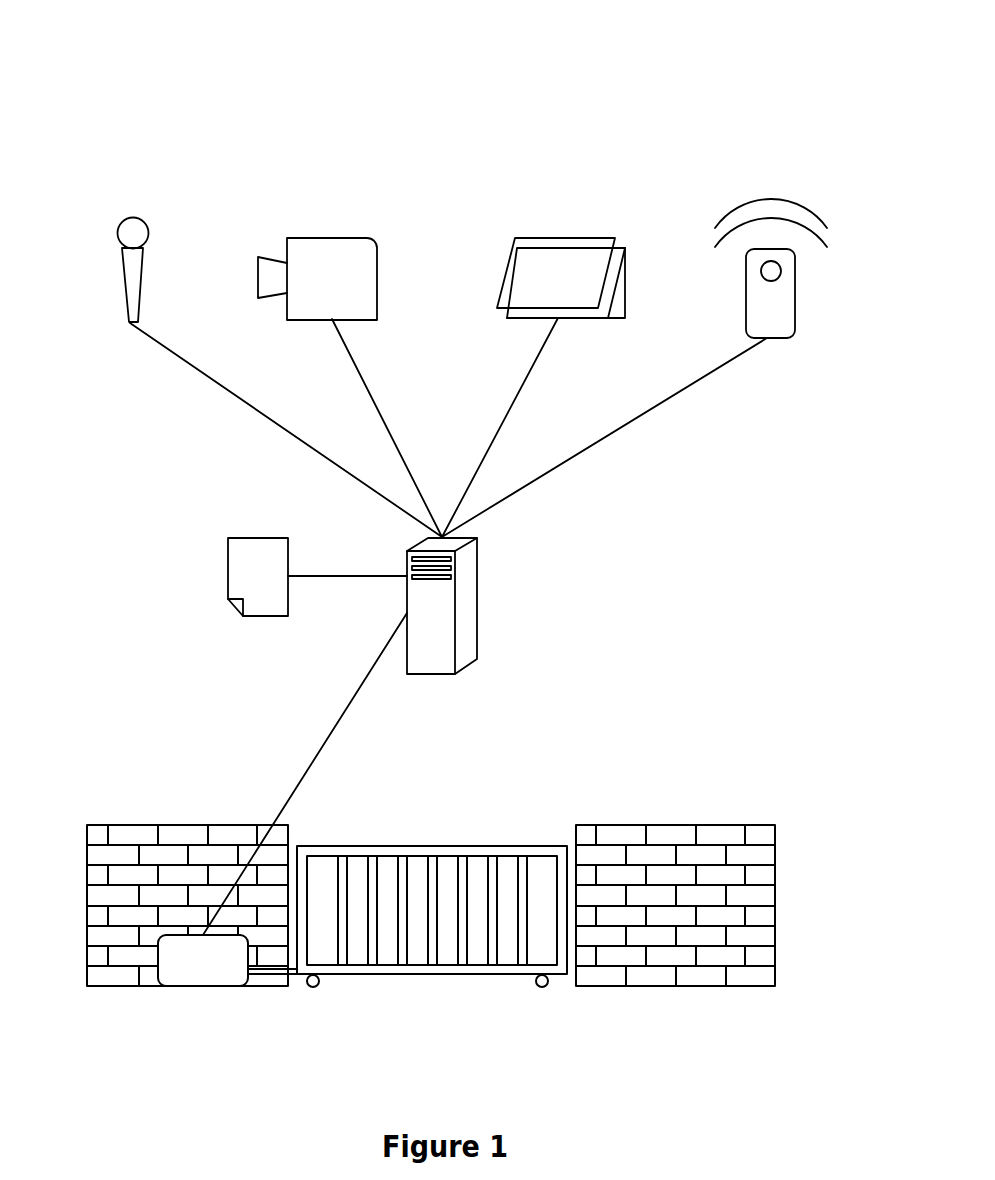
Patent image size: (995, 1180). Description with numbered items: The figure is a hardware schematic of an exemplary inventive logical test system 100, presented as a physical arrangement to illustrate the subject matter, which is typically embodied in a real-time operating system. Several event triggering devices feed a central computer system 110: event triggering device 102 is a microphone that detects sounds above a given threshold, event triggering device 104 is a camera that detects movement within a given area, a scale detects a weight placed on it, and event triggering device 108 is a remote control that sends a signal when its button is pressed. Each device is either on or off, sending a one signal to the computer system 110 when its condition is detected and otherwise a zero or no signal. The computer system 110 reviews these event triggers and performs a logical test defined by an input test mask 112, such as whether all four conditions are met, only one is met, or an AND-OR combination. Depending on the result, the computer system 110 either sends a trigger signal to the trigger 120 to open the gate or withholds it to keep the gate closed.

The logical test system 100 is at (78, 70).
The event triggering device (microphone) 102 is at (143, 273).
The event triggering device (camera) 104 is at (665, 175).
The event triggering device (remote control) 108 is at (797, 293).
The computer system 110 is at (475, 598).
The input test mask 112 is at (225, 572).
The trigger 120 is at (207, 986).